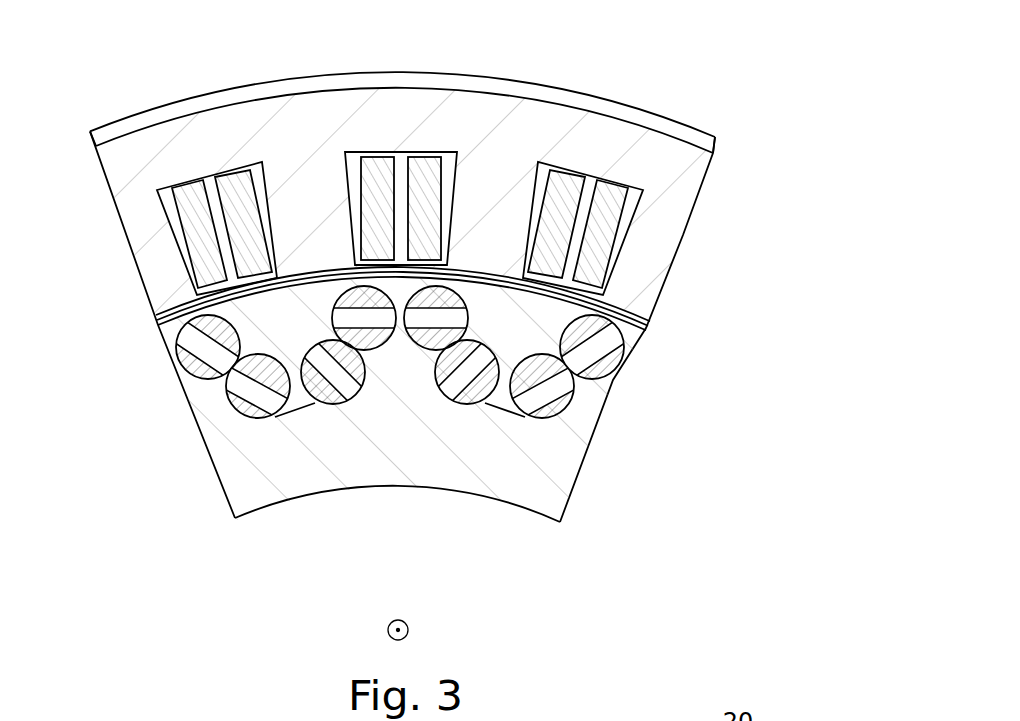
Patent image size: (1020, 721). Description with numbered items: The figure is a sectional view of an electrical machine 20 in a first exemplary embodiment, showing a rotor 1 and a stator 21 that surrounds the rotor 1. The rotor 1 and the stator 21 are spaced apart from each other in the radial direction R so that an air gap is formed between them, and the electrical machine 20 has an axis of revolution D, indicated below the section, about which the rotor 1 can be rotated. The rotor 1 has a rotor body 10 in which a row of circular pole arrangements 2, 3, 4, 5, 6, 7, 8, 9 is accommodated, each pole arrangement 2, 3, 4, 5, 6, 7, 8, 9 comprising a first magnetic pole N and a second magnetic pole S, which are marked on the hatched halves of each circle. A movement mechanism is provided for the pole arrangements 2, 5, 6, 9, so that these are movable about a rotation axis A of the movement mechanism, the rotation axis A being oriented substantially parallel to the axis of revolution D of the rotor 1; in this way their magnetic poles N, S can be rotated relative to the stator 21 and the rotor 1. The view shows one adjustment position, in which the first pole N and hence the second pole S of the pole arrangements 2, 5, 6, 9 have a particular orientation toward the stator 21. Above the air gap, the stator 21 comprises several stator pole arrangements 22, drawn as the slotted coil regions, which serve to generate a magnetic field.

The rotor 1 is at (658, 333).
The pole arrangement 2 is at (185, 386).
The pole arrangement 3 is at (210, 421).
The pole arrangement 4 is at (383, 368).
The pole arrangement 5 is at (421, 368).
The pole arrangement 6 is at (435, 346).
The pole arrangement 7 is at (463, 404).
The pole arrangement 8 is at (590, 420).
The pole arrangement 9 is at (648, 370).
The rotor body 10 is at (243, 458).
The electrical machine 20 is at (678, 58).
The stator 21 is at (240, 123).
The stator pole arrangement 22 is at (328, 132).
The second magnetic pole S is at (371, 300).
The first magnetic pole N is at (357, 346).
The rotation axis A is at (207, 347).
The radial direction R is at (737, 350).
The axis of revolution D is at (408, 627).